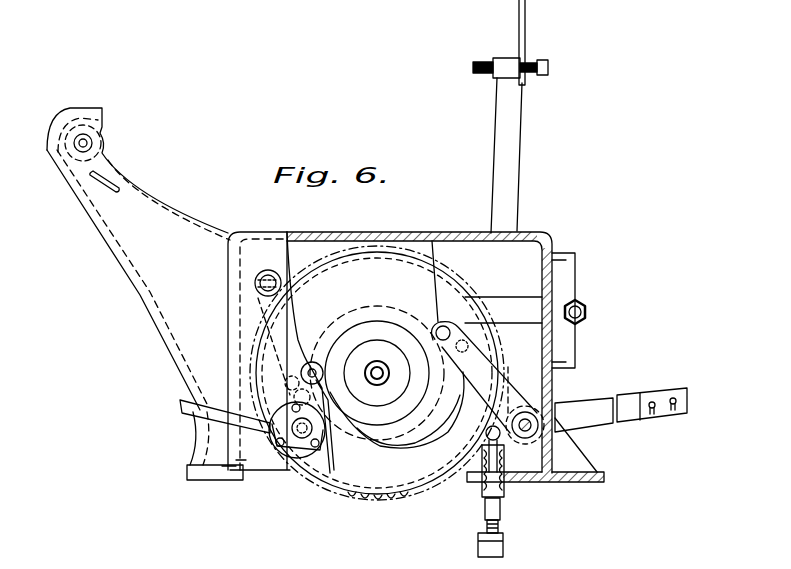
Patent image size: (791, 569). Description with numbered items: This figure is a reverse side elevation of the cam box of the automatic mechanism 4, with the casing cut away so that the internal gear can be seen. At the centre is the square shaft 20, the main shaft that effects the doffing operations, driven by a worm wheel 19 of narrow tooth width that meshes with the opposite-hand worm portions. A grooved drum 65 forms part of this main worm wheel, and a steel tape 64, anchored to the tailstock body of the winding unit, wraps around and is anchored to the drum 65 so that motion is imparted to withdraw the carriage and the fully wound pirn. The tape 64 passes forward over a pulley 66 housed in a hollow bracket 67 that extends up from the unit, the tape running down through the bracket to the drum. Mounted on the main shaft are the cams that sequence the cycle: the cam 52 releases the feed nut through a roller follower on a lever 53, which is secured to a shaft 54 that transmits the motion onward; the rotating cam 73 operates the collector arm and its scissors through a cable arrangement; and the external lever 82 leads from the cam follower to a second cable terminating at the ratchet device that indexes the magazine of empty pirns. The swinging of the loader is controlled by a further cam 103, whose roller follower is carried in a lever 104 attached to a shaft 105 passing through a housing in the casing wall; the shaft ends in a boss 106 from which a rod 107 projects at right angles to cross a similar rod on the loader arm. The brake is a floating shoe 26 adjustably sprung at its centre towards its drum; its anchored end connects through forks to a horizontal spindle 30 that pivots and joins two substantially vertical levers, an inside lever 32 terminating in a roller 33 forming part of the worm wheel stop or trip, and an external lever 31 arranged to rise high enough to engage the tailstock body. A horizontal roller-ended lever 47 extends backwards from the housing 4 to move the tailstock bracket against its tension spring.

The automatic mechanism 4 is at (247, 344).
The worm wheel 19 is at (373, 497).
The square shaft 20 is at (378, 362).
The brake shoe 26 is at (504, 538).
The spindle 30 is at (513, 469).
The lever 31 is at (513, 137).
The inside lever 32 is at (499, 373).
The roller 33 is at (502, 356).
The roller ended lever 47 is at (563, 304).
The cam 52 is at (397, 414).
The lever 53 is at (300, 338).
The shaft 54 is at (255, 282).
The steel tape 64 is at (103, 122).
The grooved drum 65 is at (425, 478).
The pulley 66 is at (106, 147).
The bracket 67 is at (103, 172).
The rotating cam 73 is at (424, 285).
The external lever 82 is at (630, 402).
The cam 103 is at (360, 335).
The lever 104 is at (322, 382).
The shaft 105 is at (344, 425).
The boss 106 is at (301, 438).
The rod 107 is at (180, 407).